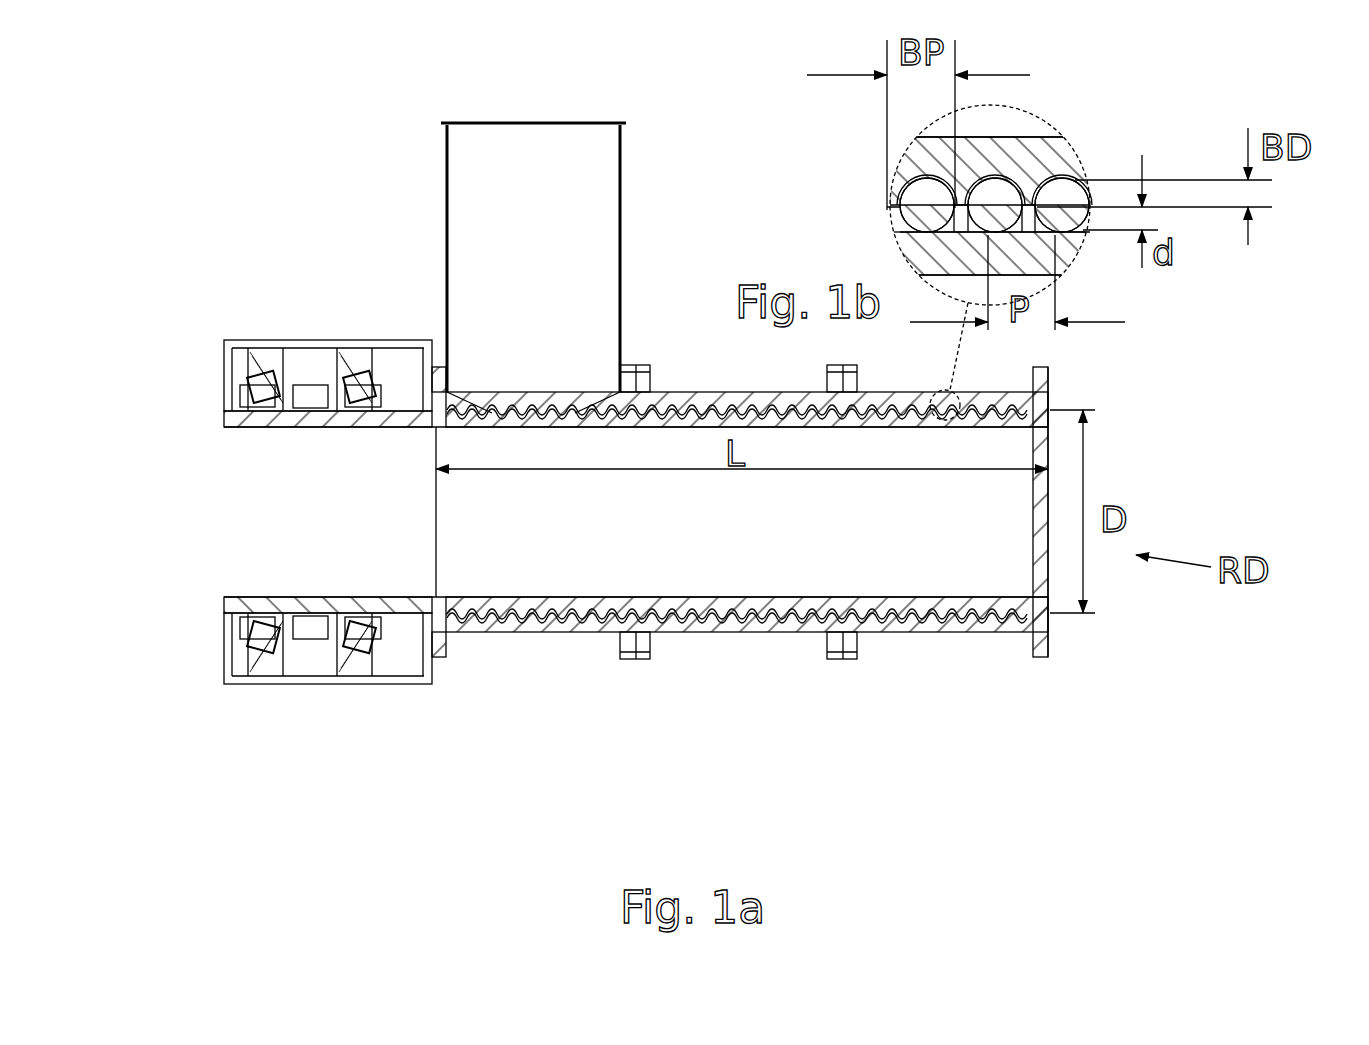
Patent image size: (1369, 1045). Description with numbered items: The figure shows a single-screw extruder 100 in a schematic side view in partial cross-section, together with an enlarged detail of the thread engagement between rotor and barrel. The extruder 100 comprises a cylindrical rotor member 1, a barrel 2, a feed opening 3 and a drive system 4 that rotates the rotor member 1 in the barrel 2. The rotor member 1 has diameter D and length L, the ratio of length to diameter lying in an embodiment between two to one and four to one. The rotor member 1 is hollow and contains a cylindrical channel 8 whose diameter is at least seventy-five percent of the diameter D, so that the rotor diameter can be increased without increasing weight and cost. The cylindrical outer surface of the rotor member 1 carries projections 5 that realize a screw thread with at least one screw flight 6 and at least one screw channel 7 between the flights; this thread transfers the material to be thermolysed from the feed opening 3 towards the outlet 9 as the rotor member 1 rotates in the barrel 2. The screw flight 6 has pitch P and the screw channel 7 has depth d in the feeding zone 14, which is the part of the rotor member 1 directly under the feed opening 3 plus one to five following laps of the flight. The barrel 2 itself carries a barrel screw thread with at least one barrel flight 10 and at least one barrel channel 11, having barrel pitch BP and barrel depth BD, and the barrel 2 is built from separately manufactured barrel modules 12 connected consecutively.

In FIG. 1A, the rotor member 1 is at (838, 597).
In FIG. 1B, the rotor member 1 is at (918, 253).
In FIG. 1A, the barrel 2 is at (796, 634).
In FIG. 1B, the barrel 2 is at (907, 173).
In FIG. 1A, the feed opening 3 is at (483, 350).
In FIG. 1A, the drive system 4 is at (308, 322).
In FIG. 1A, the projections 5 is at (543, 680).
In FIG. 1B, the projections 5 is at (1110, 142).
In FIG. 1B, the screw flight 6 is at (920, 215).
In FIG. 1B, the screw channel 7 is at (1035, 222).
In FIG. 1A, the cylindrical channel 8 is at (748, 537).
In FIG. 1A, the outlet 9 is at (1152, 470).
In FIG. 1B, the barrel flight 10 is at (963, 200).
In FIG. 1B, the barrel channel 11 is at (990, 195).
In FIG. 1A, the barrel modules 12 is at (605, 712).
In FIG. 1A, the feeding zone 14 is at (681, 553).
In FIG. 1A, the extruder 100 is at (1187, 853).